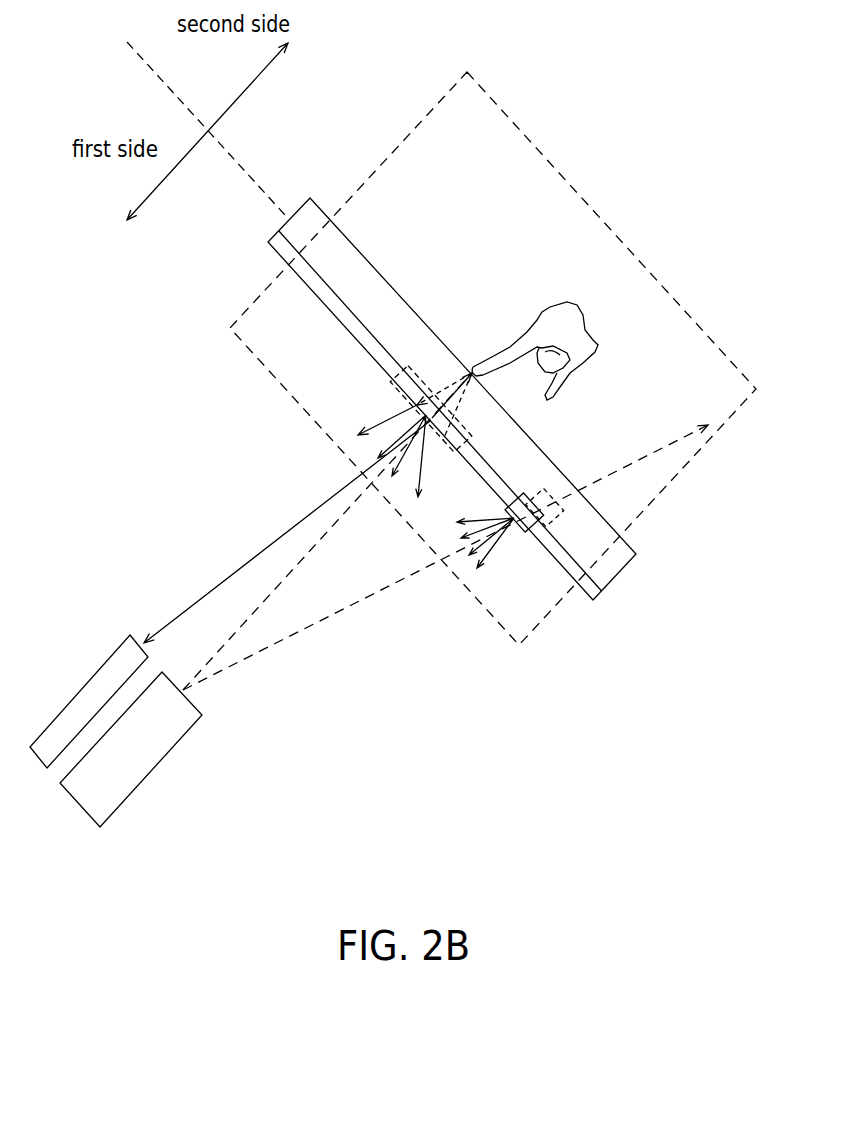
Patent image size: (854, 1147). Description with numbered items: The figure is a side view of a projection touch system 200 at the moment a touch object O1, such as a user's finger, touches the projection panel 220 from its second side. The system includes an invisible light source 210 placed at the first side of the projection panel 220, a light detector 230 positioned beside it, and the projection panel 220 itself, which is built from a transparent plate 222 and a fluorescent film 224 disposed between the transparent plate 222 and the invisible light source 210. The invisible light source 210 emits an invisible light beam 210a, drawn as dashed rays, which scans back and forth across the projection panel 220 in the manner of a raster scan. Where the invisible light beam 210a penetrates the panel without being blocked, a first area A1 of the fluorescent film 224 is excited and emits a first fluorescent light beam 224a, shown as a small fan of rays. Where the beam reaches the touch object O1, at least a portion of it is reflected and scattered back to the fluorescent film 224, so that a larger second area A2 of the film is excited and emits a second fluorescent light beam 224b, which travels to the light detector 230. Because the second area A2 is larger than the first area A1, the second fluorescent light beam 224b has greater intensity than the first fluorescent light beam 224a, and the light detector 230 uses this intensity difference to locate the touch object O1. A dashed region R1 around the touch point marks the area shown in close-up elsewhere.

The projection touch system 200 is at (629, 793).
The invisible light source 210 is at (160, 738).
The invisible light beam 210a is at (437, 395).
The projection panel 220 is at (461, 457).
The transparent plate 222 is at (603, 573).
The fluorescent film 224 is at (440, 450).
The first fluorescent light beam 224a is at (497, 548).
The second fluorescent light beam 224b is at (395, 412).
The light detector 230 is at (93, 673).
The first area A1 is at (525, 492).
The second area A2 is at (467, 453).
The touch object O1 is at (549, 312).
The region R1 is at (444, 90).